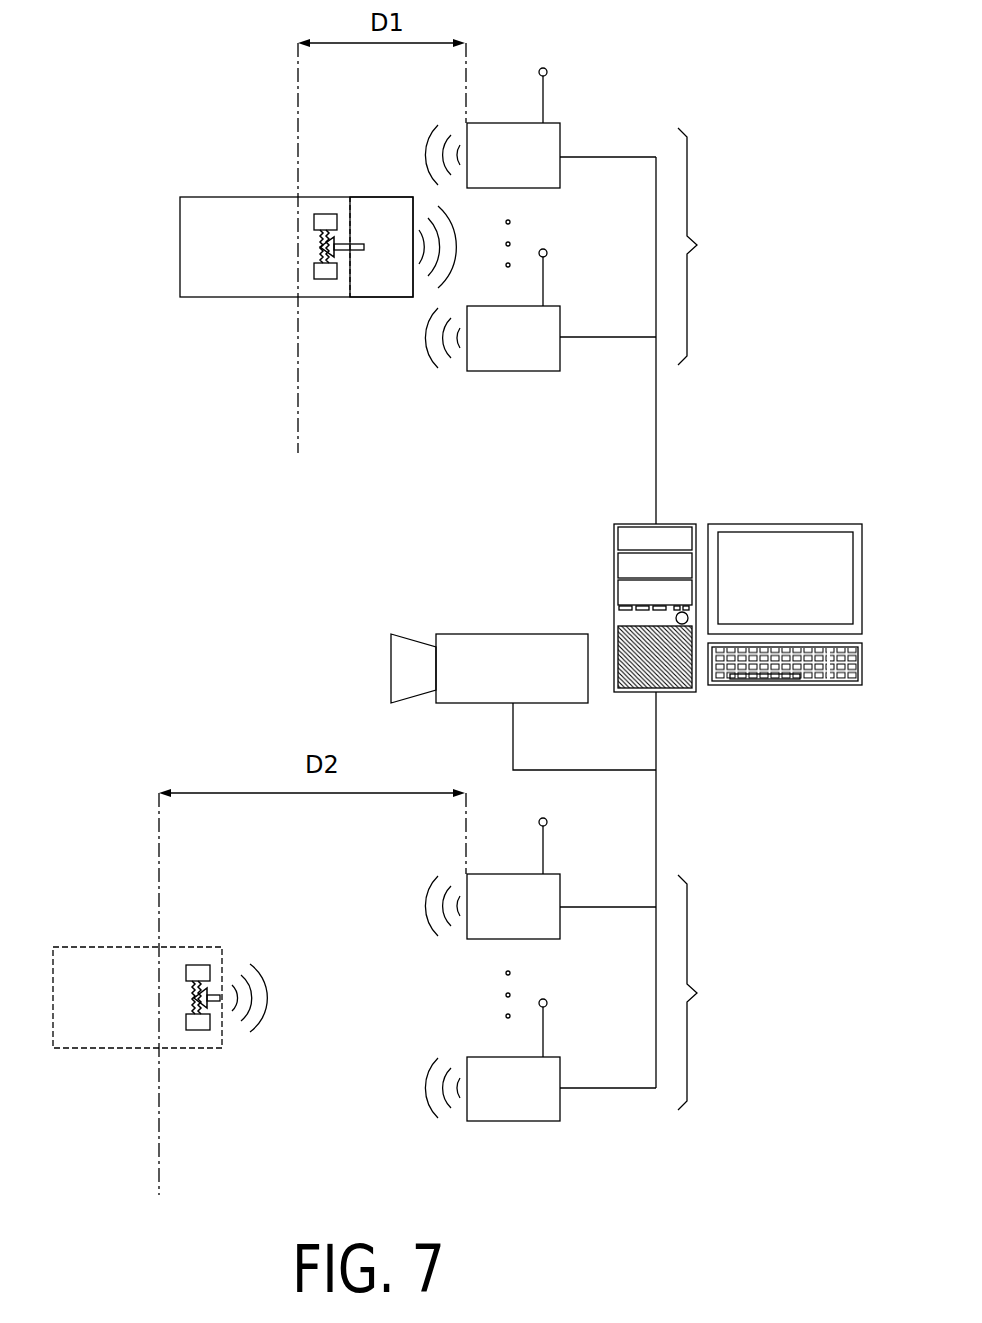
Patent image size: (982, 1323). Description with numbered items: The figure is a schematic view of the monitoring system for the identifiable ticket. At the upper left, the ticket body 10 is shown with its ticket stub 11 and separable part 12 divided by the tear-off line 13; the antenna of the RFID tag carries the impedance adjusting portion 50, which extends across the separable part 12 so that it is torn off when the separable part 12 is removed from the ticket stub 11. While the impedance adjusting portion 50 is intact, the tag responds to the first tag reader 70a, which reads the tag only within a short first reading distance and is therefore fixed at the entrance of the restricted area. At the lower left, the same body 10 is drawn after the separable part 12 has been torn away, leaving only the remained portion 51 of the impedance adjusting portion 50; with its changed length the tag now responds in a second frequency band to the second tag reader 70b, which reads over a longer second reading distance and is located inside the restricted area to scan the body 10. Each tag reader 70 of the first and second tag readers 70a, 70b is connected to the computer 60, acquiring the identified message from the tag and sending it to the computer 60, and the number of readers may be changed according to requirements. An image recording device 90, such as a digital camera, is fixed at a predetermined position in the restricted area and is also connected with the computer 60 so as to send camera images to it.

The body 10 is at (262, 308).
The ticket stub 11 is at (329, 188).
The separable part 12 is at (386, 212).
The tear-off line 13 is at (347, 304).
The impedance adjusting portion 50 is at (364, 249).
The remained portion 51 is at (213, 996).
The computer 60 is at (675, 535).
The tag reader 70 is at (545, 140).
The first tag reader 70a is at (595, 249).
The second tag reader 70b is at (591, 969).
The image recording device 90 is at (478, 655).